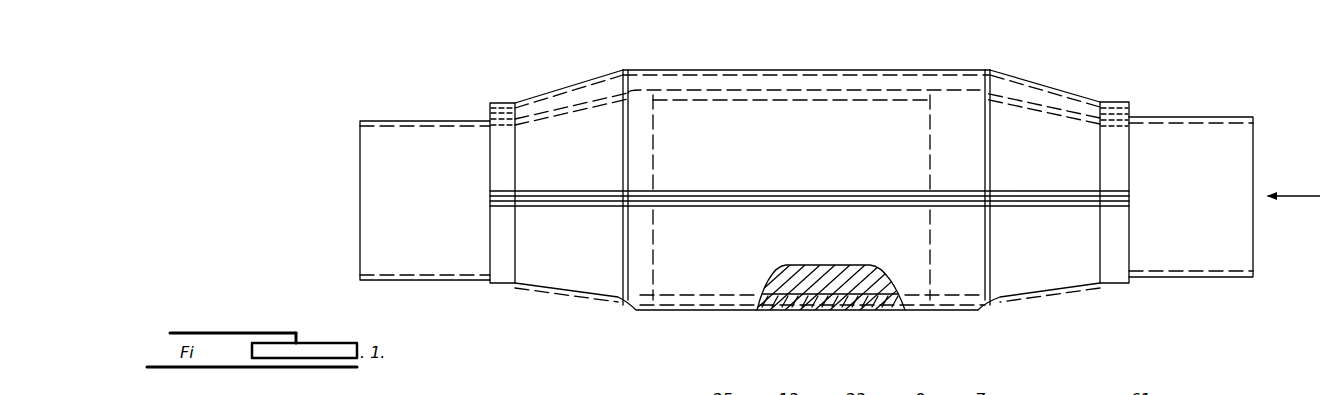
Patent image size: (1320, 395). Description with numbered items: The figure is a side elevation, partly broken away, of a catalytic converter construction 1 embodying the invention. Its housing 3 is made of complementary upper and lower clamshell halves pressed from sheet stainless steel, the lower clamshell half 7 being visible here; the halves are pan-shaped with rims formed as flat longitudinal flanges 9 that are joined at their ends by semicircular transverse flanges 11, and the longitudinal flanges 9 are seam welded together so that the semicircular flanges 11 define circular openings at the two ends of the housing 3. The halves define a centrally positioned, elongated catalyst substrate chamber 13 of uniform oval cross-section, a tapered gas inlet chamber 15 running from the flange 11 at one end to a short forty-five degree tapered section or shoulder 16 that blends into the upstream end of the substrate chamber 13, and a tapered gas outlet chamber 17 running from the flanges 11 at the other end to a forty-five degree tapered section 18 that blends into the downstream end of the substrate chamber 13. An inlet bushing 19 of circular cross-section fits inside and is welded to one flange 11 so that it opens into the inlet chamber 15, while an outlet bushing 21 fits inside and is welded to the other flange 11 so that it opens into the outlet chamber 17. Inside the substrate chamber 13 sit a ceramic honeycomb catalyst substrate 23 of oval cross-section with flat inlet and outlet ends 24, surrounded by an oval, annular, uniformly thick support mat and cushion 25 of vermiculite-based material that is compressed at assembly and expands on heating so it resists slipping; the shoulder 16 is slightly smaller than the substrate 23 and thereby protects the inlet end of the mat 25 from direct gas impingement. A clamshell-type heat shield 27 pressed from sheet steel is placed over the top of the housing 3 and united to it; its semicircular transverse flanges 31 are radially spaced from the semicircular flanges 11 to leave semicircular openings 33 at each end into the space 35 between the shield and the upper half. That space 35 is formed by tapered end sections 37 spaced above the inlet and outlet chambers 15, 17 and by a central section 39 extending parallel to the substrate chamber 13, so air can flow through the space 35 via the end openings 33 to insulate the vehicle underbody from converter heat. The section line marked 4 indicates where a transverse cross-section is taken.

The catalytic converter construction 1 is at (1156, 80).
The housing 3 is at (736, 236).
The section line 4- 4 is at (752, 50).
The lower clamshell half 7 is at (968, 318).
The longitudinal flanges 9 is at (775, 206).
The semicircular transverse flanges 11 is at (490, 110).
The catalyst substrate chamber 13 is at (838, 300).
The gas inlet chamber 15 is at (1045, 290).
The tapered section or shoulder 16 is at (992, 72).
The gas outlet chamber 17 is at (560, 298).
The tapered section 18 is at (640, 313).
The inlet bushing 19 is at (1200, 206).
The outlet bushing 21 is at (430, 208).
The catalyst substrate 23 is at (930, 157).
The flat inlet and outlet ends 24 is at (655, 164).
The support mat and cushion 25 is at (824, 100).
The heat shield 27 is at (1102, 97).
The semicircular transverse flanges 31 is at (501, 105).
The semicircular openings 33 is at (497, 107).
The space 35 is at (812, 76).
The tapered end sections 37 is at (553, 95).
The central section 39 is at (888, 70).